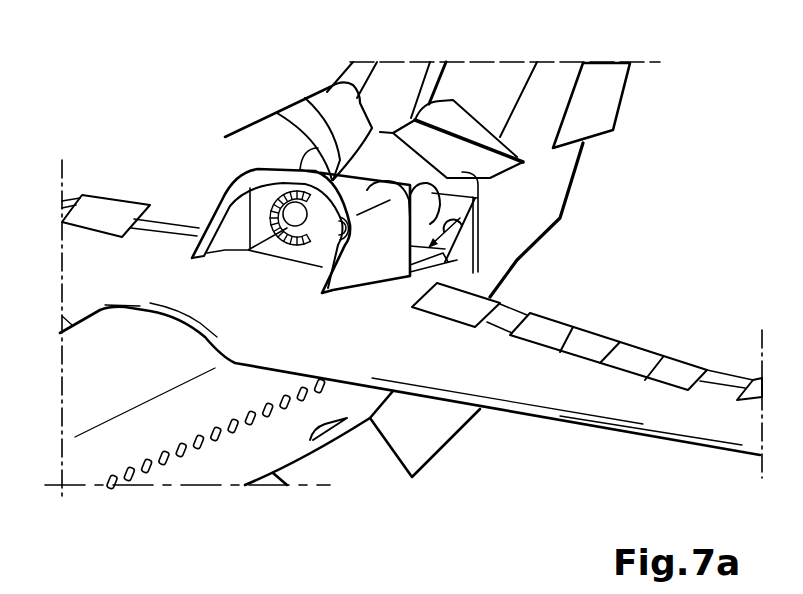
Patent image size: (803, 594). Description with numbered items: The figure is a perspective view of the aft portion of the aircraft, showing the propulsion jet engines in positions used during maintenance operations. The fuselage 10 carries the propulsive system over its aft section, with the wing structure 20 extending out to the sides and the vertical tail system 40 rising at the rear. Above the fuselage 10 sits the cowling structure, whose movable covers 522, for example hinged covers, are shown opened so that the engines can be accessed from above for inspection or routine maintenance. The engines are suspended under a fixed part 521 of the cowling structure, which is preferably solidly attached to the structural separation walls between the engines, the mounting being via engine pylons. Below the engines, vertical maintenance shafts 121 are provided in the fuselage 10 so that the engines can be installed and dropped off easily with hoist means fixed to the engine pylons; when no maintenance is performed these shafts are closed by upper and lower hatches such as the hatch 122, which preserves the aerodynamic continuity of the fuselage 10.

The fuselage 10 is at (204, 500).
The wing structure 20 is at (591, 445).
The vertical tail system 40 is at (640, 117).
The vertical maintenance shafts 121 is at (482, 232).
The hatch 122 is at (430, 436).
The fixed part of the cowling structure 521 is at (247, 172).
The movable covers 522 is at (328, 84).